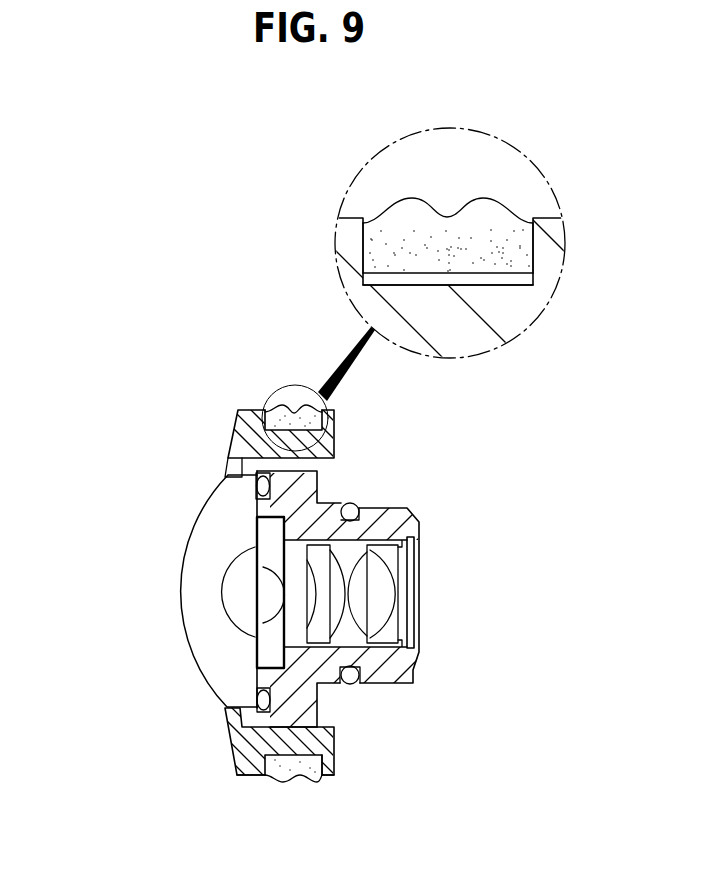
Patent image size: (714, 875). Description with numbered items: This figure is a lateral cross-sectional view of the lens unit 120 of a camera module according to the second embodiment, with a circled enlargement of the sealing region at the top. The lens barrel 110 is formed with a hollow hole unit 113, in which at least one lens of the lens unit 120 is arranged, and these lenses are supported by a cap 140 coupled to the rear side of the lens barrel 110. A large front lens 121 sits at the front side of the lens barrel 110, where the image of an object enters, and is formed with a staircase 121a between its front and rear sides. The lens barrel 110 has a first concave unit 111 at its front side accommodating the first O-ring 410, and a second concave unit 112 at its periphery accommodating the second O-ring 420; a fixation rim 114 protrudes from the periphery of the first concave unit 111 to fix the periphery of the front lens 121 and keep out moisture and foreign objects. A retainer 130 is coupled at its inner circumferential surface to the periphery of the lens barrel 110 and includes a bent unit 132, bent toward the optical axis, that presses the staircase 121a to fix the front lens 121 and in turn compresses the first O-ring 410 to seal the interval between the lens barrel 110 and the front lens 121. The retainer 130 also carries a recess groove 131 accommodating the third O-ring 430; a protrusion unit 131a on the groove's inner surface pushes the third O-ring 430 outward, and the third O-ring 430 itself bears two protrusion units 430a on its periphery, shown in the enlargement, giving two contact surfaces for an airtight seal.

The lens barrel 110 is at (458, 700).
The first concave unit 111 is at (322, 760).
The second concave unit 112 is at (360, 677).
The hollow hole unit 113 is at (365, 640).
The fixation rim 114 is at (306, 783).
The lens unit 120 is at (113, 510).
The front lens 121 is at (215, 523).
The staircase 121a is at (228, 470).
The retainer 130 is at (235, 413).
The recess groove 131 is at (270, 772).
The protrusion unit 131a is at (425, 275).
The bent unit 132 is at (228, 712).
The cap 140 is at (415, 590).
The first O-ring 410 is at (270, 482).
The second O-ring 420 is at (352, 505).
The third O-ring 430 is at (280, 407).
The protrusion unit 430a is at (412, 208).